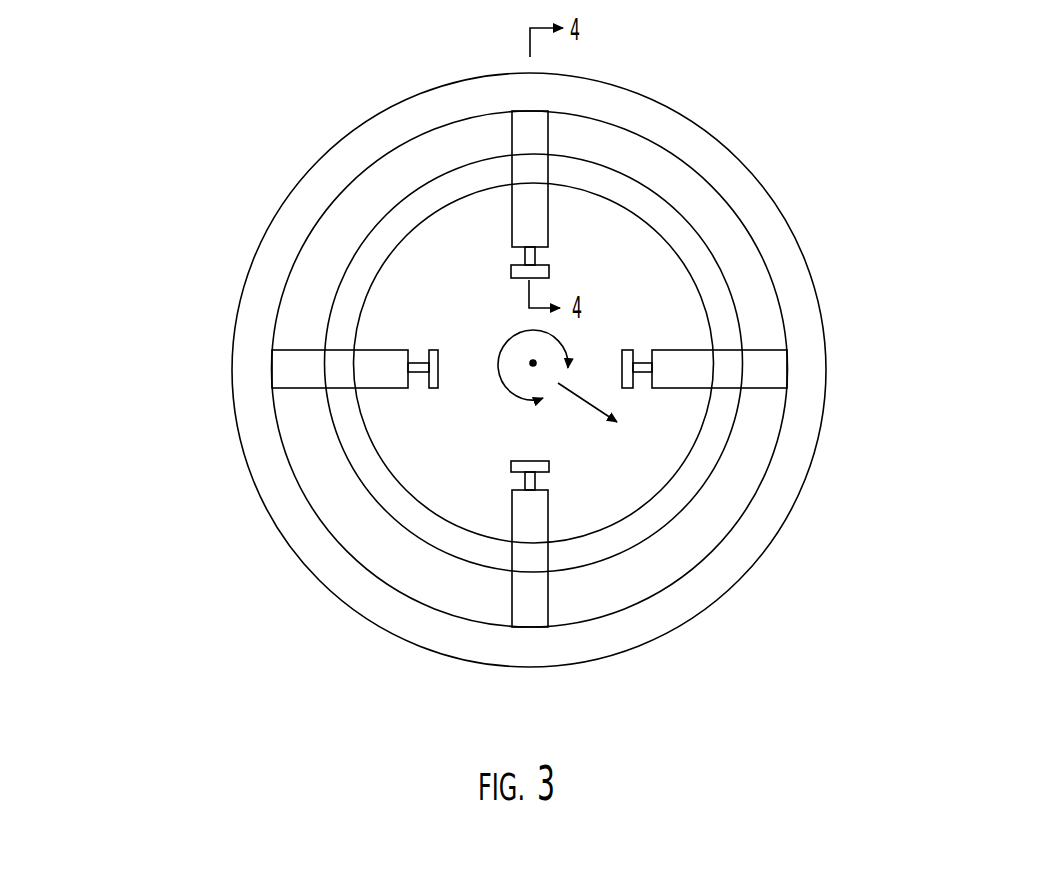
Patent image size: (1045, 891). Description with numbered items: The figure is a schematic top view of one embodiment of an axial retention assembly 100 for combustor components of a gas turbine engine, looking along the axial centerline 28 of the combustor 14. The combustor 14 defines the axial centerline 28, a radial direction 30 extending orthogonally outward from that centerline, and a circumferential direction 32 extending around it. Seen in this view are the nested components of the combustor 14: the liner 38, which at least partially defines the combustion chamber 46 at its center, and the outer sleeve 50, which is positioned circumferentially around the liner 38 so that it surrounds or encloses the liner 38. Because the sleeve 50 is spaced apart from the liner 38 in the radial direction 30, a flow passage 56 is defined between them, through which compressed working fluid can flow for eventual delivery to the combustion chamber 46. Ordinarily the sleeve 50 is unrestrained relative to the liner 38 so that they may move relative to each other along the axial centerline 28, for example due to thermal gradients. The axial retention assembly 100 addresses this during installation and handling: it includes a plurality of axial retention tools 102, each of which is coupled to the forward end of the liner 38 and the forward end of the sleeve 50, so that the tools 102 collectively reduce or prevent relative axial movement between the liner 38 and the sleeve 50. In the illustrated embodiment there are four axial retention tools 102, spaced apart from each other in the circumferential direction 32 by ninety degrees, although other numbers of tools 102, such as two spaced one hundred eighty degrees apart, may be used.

The axial retention assembly 100 is at (127, 63).
The combustor 14 is at (280, 632).
The axial centerline 28 is at (531, 365).
The radial direction 30 is at (592, 407).
The circumferential direction 32 is at (512, 337).
The liner 38 is at (658, 235).
The combustion chamber 46 is at (477, 250).
The outer sleeve 50 is at (293, 188).
The flow passage 56 is at (457, 601).
The axial retention tool 102 is at (535, 142).